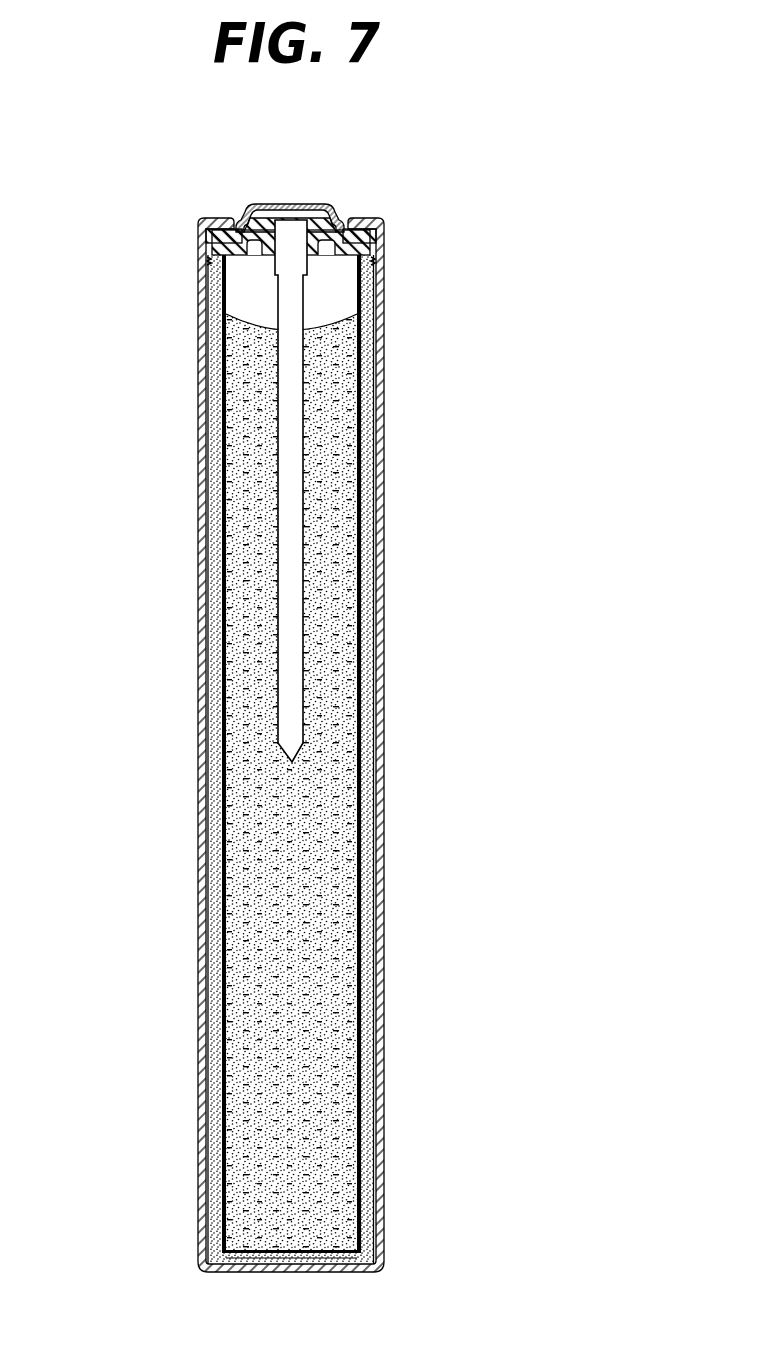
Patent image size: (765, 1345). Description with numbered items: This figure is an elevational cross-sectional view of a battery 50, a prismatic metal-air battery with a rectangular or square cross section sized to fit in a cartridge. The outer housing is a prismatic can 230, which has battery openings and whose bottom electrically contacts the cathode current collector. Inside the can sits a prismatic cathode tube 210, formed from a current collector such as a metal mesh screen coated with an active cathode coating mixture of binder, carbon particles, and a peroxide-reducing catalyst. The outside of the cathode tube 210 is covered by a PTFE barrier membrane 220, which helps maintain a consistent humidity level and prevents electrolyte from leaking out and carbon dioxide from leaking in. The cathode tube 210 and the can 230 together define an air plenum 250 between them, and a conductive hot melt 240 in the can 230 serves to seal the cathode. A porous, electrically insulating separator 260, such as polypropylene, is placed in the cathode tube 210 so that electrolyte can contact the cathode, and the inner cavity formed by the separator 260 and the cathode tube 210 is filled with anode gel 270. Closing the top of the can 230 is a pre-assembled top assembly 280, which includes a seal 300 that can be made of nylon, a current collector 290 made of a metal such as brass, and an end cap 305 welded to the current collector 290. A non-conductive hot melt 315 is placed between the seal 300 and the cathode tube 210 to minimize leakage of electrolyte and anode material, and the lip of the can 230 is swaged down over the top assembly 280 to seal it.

The battery 50 is at (502, 162).
The cathode tube 210 is at (365, 812).
The barrier membrane 220 is at (372, 950).
The can 230 is at (200, 1137).
The conductive hot melt 240 is at (209, 262).
The air plenum 250 is at (372, 1083).
The separator 260 is at (218, 948).
The anode gel 270 is at (340, 583).
The top assembly 280 is at (251, 182).
The current collector 290 is at (275, 385).
The seal 300 is at (343, 224).
The end cap 305 is at (295, 206).
The non-conductive hot melt 315 is at (345, 252).